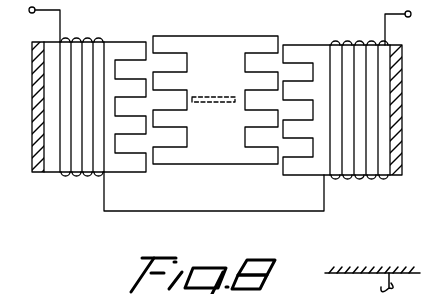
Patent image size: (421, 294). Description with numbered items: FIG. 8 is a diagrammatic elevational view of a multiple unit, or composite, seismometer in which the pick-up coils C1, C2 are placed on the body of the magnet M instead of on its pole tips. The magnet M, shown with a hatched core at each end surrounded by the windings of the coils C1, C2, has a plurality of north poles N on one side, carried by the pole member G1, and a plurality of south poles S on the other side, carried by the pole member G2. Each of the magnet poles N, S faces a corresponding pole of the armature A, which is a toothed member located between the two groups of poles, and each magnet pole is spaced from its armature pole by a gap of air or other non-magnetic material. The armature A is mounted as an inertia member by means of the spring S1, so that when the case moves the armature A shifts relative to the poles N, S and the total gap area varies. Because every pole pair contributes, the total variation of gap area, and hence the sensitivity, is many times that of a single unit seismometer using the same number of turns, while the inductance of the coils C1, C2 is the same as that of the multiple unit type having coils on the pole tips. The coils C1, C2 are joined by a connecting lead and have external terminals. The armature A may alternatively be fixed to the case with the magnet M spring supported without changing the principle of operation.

The pick-up coil C1 is at (79, 42).
The pick-up coil C2 is at (346, 45).
The magnet M is at (52, 174).
The first field member (stator) with N poles G1 is at (137, 88).
The second field member (stator) with S poles G2 is at (306, 93).
The north poles N is at (154, 24).
The south poles S is at (292, 30).
The armature A is at (212, 36).
The spring S1 is at (219, 103).